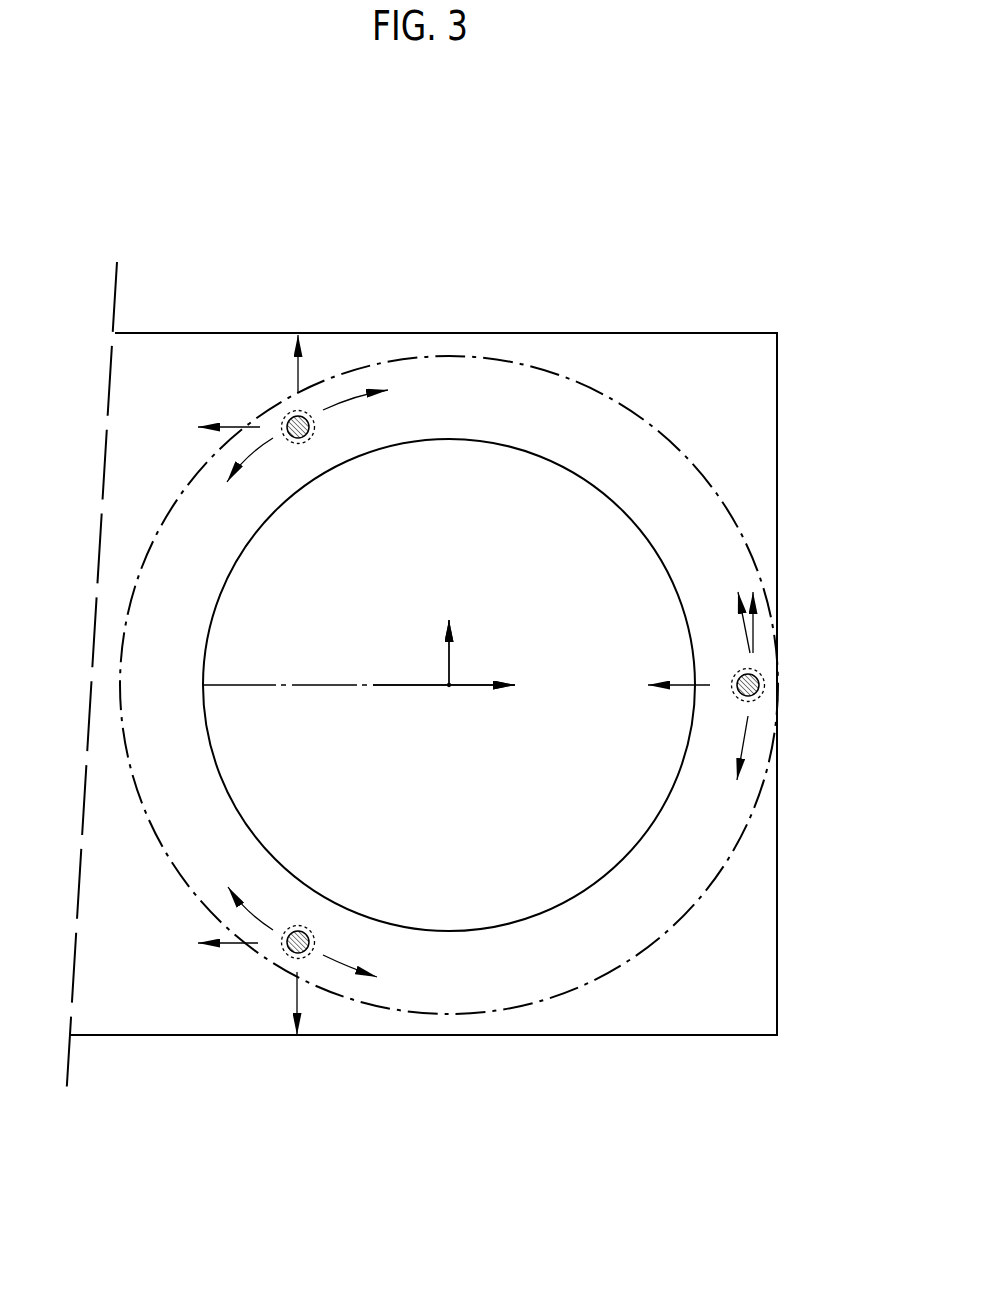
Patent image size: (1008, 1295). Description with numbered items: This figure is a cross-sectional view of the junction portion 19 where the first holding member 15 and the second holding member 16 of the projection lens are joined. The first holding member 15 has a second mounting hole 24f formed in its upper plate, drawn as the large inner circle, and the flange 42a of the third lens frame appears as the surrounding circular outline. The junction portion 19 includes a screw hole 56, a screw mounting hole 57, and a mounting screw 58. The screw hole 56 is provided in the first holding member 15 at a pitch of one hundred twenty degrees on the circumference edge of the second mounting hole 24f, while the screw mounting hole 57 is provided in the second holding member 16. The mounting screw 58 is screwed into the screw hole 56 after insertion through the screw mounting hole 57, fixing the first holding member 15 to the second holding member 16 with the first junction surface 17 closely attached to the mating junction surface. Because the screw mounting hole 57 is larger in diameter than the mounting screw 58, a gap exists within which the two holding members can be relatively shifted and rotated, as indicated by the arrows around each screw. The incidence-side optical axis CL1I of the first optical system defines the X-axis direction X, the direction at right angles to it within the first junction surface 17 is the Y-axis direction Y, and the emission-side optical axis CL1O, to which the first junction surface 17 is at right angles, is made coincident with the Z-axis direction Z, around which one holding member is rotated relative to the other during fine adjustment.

The first holding member 15 is at (752, 333).
The second holding member 16 is at (600, 392).
The first junction surface 17 is at (230, 380).
The junction portion 19 is at (815, 537).
The flange 42a is at (482, 357).
The second mounting hole 24f is at (225, 583).
The screw hole 56 is at (306, 445).
The screw mounting hole 57 is at (297, 410).
The mounting screw 58 is at (313, 417).
The incidence-side optical axis CL1I is at (320, 688).
The emission-side optical axis CL1O is at (450, 685).
The X-axis X is at (472, 686).
The Y-axis Y is at (449, 655).
The Z-axis Z is at (452, 688).